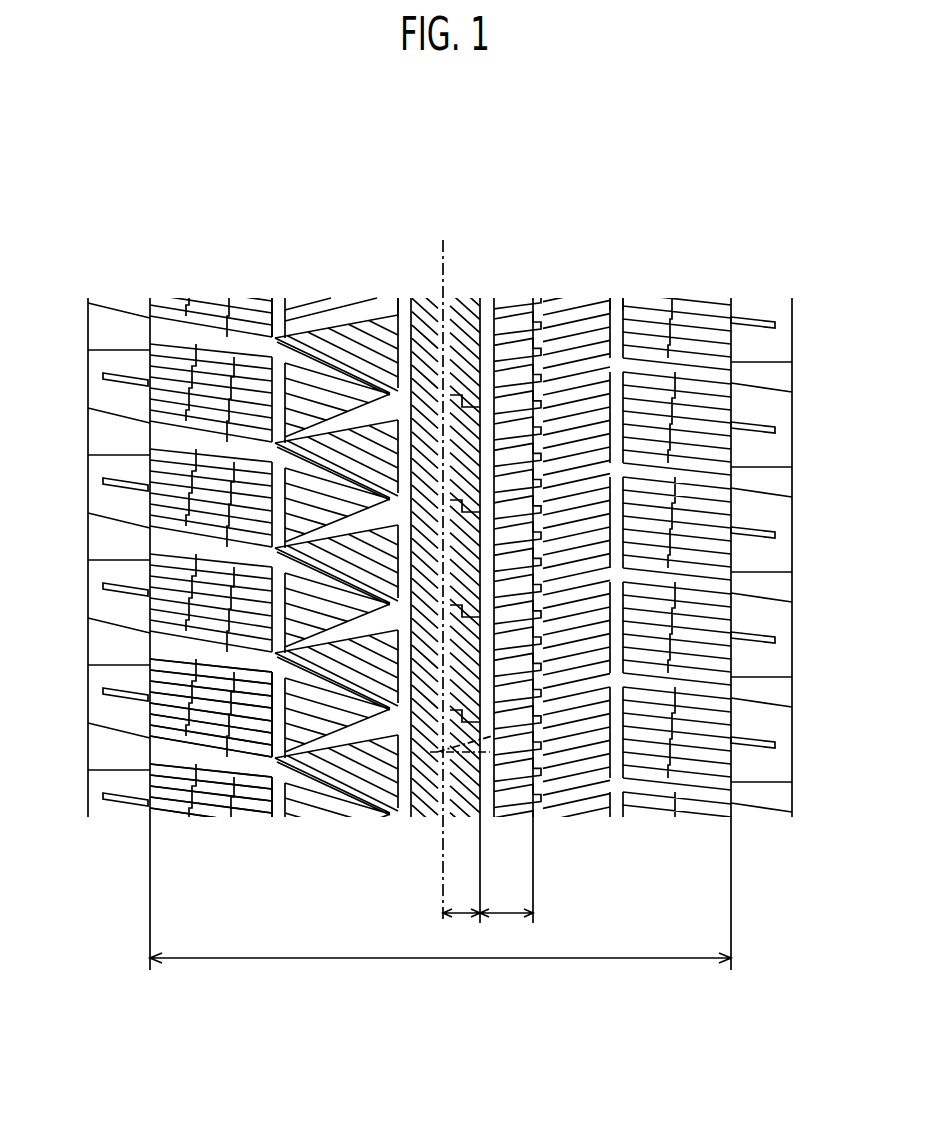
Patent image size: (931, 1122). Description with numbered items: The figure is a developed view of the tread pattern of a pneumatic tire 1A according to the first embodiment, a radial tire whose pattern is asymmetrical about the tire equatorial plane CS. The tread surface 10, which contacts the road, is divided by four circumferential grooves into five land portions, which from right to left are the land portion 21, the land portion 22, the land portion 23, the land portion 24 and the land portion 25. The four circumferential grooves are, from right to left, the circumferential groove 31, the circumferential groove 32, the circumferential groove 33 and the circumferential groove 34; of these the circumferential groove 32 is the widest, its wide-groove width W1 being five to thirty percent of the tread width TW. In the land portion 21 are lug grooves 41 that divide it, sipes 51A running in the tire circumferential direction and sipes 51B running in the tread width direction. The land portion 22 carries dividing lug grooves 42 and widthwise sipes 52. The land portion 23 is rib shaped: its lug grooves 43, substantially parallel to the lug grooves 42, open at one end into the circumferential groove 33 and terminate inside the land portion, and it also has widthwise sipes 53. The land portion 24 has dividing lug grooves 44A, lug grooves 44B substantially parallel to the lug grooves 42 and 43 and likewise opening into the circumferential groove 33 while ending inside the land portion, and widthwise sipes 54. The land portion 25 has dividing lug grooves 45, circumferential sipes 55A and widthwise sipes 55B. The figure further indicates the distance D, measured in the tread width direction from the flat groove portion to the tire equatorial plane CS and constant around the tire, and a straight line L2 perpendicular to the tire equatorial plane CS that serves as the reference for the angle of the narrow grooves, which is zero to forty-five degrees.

The tread surface 10 is at (764, 292).
The pneumatic tire 1A is at (147, 238).
The lug grooves 45 is at (102, 328).
The lug grooves 41 is at (792, 386).
The sipes 55A is at (185, 815).
The sipes 55B is at (225, 312).
The land portion 25 is at (234, 800).
The circumferential groove 34 is at (283, 312).
The land portion 24 is at (326, 570).
The lug grooves 44A is at (302, 786).
The lug grooves 44B is at (346, 318).
The sipes 54 is at (388, 312).
The lug grooves 43 is at (405, 812).
The circumferential groove 33 is at (418, 312).
The land portion 23 is at (449, 557).
The sipes 53 is at (473, 310).
The straight line L2 is at (463, 752).
The tire equatorial plane CS is at (443, 248).
The circumferential groove 32 is at (517, 293).
The land portion 22 is at (552, 565).
The lug grooves 42 is at (583, 788).
The sipes 52 is at (569, 310).
The circumferential groove 31 is at (616, 308).
The land portion 21 is at (674, 574).
The sipes 51A is at (668, 298).
The sipes 51B is at (720, 310).
The tread width TW is at (440, 634).
The distance D is at (461, 896).
The wide-groove width W1 is at (506, 896).